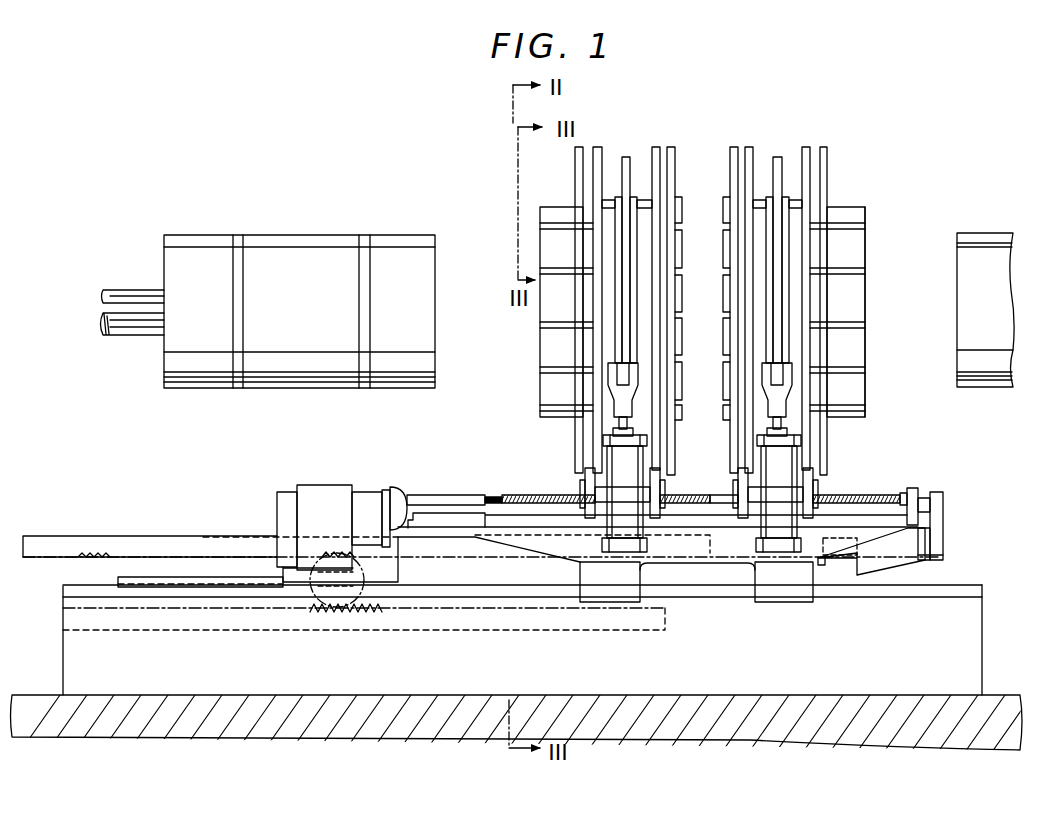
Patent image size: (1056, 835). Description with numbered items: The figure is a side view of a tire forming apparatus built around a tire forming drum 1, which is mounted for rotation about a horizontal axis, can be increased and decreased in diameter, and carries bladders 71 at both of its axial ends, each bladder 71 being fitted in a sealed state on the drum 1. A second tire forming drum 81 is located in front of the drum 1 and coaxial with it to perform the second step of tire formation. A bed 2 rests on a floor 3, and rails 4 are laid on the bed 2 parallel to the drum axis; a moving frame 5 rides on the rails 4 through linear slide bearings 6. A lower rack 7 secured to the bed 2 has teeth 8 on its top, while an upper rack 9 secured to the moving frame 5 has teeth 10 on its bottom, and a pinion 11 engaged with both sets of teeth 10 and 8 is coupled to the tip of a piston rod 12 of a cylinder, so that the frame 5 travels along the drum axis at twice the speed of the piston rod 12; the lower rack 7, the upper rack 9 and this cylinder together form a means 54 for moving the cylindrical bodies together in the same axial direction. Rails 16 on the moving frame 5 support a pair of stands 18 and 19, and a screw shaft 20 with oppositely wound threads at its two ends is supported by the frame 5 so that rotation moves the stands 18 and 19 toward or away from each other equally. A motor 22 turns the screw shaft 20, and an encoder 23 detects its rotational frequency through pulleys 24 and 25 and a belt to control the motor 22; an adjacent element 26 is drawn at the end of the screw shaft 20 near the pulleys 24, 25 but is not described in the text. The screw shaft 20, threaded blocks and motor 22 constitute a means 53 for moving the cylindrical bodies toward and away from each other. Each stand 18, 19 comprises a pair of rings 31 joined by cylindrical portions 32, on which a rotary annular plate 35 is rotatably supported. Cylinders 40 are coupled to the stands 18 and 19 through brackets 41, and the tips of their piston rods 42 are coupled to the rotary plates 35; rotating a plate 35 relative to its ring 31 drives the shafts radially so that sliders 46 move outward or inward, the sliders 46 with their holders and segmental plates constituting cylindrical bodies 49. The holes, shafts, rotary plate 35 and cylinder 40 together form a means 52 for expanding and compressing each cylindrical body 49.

The tire forming drum 1 is at (268, 286).
The bladders 71 is at (203, 235).
The bed 2 is at (975, 643).
The floor 3 is at (990, 705).
The rails 4 is at (975, 592).
The moving frame 5 is at (728, 590).
The linear slide bearings 6 is at (586, 590).
The lower rack 7 is at (458, 620).
The teeth 8 is at (376, 612).
The upper rack 9 is at (479, 542).
The teeth 10 is at (78, 558).
The pinion 11 is at (330, 606).
The piston rod 12 is at (236, 577).
The rails 16 is at (495, 513).
The stand 18 is at (709, 322).
The stand 19 is at (759, 146).
The screw shaft 20 is at (540, 495).
The motor 22 is at (322, 486).
The encoder 23 is at (900, 567).
The pulley 24 is at (944, 500).
The pulley 25 is at (945, 556).
The bearing bracket 26 is at (940, 529).
The rings 31 is at (597, 147).
The cylindrical portions 32 is at (645, 208).
The rotary annular plate 35 is at (628, 158).
The cylinders 40 is at (641, 452).
The brackets 41 is at (663, 491).
The piston rods 42 is at (630, 422).
The sliders 46 is at (578, 196).
The cylindrical bodies 49 is at (539, 346).
The means for expanding and compressing the cylindrical body 52 is at (868, 430).
The means for moving the cylindrical bodies toward and away from each other 53 is at (428, 494).
The means for moving the cylindrical bodies together in the axial direction 54 is at (155, 532).
The second tire forming drum 81 is at (966, 257).